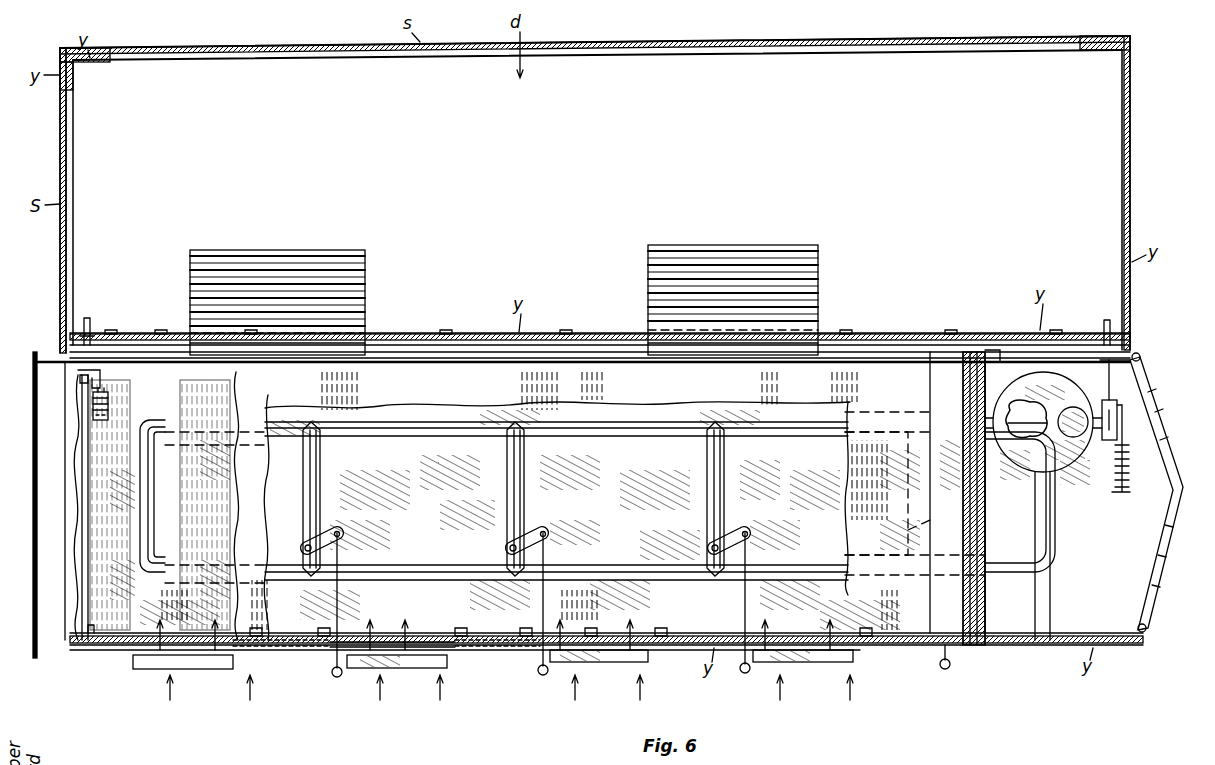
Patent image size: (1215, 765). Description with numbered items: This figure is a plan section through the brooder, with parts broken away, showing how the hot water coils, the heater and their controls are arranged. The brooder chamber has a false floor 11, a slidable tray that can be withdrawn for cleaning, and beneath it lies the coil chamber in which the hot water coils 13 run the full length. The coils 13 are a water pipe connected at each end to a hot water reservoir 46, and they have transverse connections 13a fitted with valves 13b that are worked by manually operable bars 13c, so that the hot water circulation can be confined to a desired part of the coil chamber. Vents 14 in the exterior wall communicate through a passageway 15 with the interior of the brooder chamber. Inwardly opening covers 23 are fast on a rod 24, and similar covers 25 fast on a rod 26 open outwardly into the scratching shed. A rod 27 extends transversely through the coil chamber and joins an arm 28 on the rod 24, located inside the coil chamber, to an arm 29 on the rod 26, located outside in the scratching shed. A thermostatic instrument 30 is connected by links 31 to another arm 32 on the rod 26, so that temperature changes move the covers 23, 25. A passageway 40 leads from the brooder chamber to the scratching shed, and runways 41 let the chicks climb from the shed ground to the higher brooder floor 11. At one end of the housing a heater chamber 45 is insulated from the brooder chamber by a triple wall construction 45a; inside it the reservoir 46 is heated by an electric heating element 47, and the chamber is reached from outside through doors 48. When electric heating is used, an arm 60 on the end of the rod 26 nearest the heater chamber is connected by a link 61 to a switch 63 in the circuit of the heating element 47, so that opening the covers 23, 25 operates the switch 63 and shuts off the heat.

The false floor 11 is at (52, 372).
The hot water coils 13 is at (137, 449).
The transverse connections 13a is at (318, 486).
The valves 13b is at (510, 547).
The manually operable bars 13c is at (750, 541).
The vents 14 is at (385, 672).
The passageway 15 is at (185, 645).
The inwardly opening covers 23 is at (280, 640).
The rod 24 is at (398, 640).
The covers 25 is at (143, 332).
The rod 26 is at (400, 343).
The rod 27 is at (84, 538).
The arm 28 is at (92, 628).
The arm 29 is at (92, 330).
The thermostatic instrument 30 is at (110, 410).
The links 31 is at (102, 386).
The arm 32 is at (82, 384).
The passageway 40 is at (345, 352).
The runways 41 is at (310, 258).
The heater chamber 45 is at (1032, 497).
The triple wall construction 45a is at (1022, 362).
The hot water reservoir 46 is at (1065, 462).
The electric heating element 47 is at (1025, 440).
The doors 48 is at (1175, 465).
The arm 60 is at (1108, 318).
The link 61 is at (1140, 360).
The switch 63 is at (1118, 400).